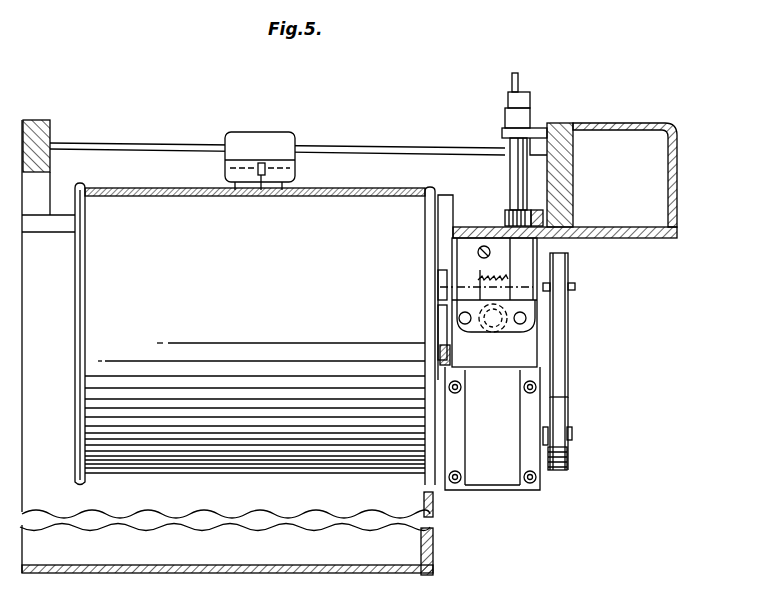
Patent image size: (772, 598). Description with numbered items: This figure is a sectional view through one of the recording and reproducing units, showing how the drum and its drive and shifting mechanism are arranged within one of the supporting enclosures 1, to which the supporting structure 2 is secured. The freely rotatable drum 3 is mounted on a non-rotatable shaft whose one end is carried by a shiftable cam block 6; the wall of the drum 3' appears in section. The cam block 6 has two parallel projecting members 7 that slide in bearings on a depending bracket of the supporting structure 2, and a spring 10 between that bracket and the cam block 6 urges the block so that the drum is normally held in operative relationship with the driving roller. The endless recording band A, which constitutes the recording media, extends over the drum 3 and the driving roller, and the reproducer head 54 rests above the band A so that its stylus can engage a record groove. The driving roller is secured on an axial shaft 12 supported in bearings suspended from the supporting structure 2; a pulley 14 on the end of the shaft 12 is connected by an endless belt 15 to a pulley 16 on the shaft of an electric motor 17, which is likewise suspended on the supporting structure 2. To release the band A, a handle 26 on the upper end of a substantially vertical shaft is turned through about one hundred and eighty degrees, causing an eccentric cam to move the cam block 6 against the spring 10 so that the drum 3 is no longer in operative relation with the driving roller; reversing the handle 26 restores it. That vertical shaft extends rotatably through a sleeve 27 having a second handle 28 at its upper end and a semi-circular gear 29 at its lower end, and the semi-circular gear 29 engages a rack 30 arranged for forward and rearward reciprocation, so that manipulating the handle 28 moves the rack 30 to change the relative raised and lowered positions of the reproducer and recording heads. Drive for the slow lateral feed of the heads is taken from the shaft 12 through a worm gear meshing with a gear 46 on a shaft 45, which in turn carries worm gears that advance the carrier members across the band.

The supporting enclosure 1 is at (431, 553).
The supporting structure 2 is at (678, 236).
The drum 3 is at (255, 334).
The drum side wall 3' is at (58, 324).
The cam block 6 is at (499, 361).
The projecting members 7 is at (465, 326).
The spring 10 is at (497, 306).
The axial shaft 12 is at (575, 290).
The pulley 14 is at (568, 262).
The endless belt 15 is at (568, 365).
The pulley 16 is at (568, 455).
The electric motor 17 is at (497, 480).
The handle 26 is at (510, 82).
The sleeve 27 is at (512, 176).
The handle 28 is at (520, 82).
The semi-circular gear 29 is at (505, 214).
The rack 30 is at (545, 216).
The shaft 45 is at (478, 252).
The gear 46 is at (490, 267).
The reproducer head 54 is at (249, 134).
The endless recording band A is at (352, 192).